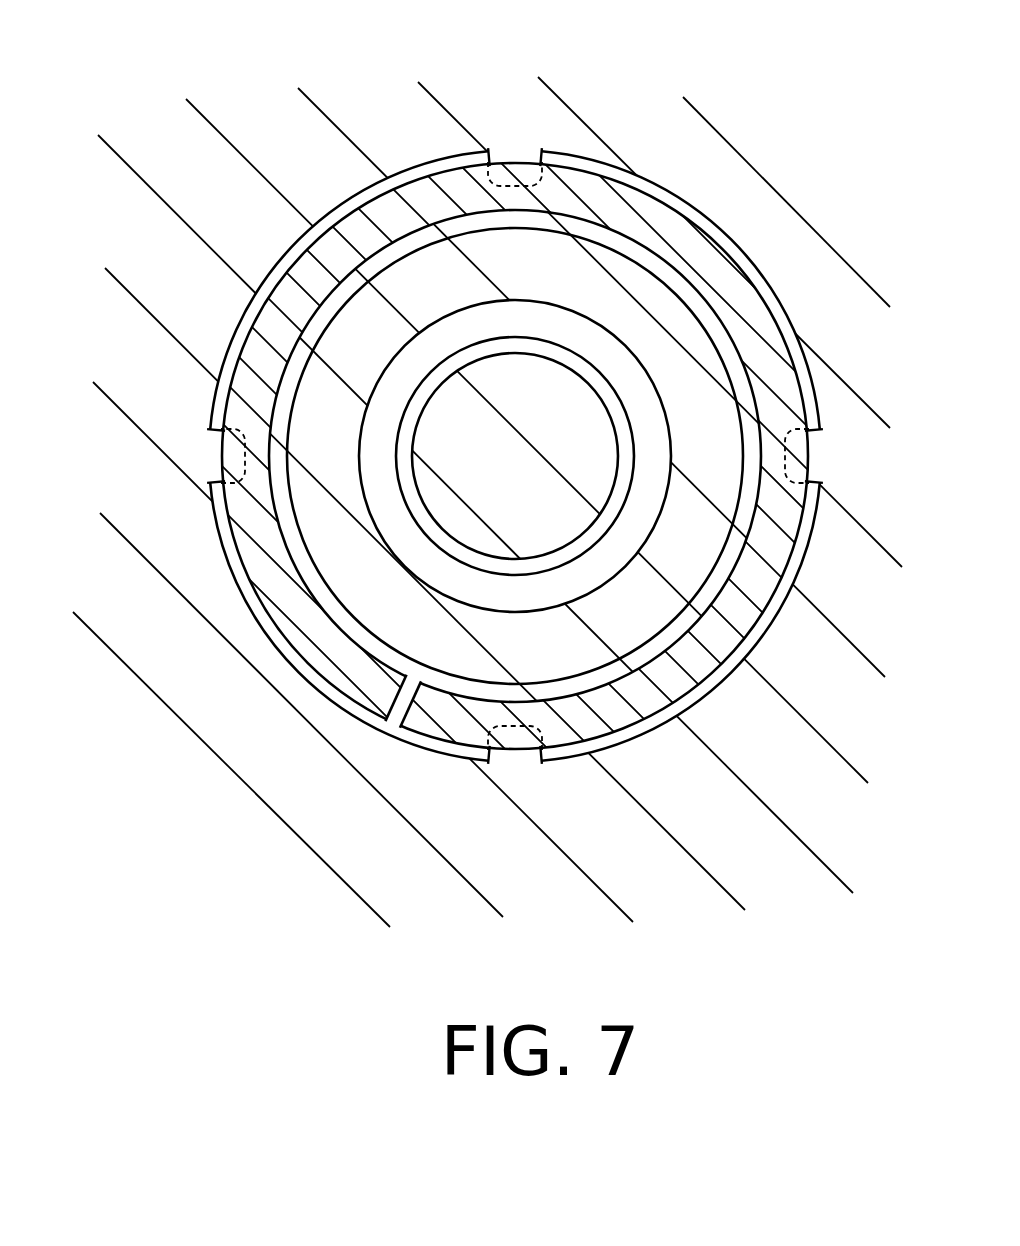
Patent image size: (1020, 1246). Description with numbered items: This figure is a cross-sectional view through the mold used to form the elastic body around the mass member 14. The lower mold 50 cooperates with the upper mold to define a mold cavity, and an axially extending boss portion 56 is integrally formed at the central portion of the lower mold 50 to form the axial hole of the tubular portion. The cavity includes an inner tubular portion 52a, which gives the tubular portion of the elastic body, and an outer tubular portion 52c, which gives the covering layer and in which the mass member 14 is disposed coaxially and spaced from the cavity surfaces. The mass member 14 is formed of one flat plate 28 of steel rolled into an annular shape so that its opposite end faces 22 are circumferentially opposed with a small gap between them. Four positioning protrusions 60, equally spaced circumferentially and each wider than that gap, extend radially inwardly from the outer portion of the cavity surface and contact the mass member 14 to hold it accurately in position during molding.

The mass member 14 is at (772, 282).
The end faces 22 is at (392, 690).
The flat plate 28 is at (315, 645).
The lower mold 50 is at (290, 162).
The inner tubular portion 52a is at (565, 325).
The outer tubular portion 52c is at (240, 577).
The boss portion 56 is at (592, 460).
The positioning protrusions 60 is at (545, 157).